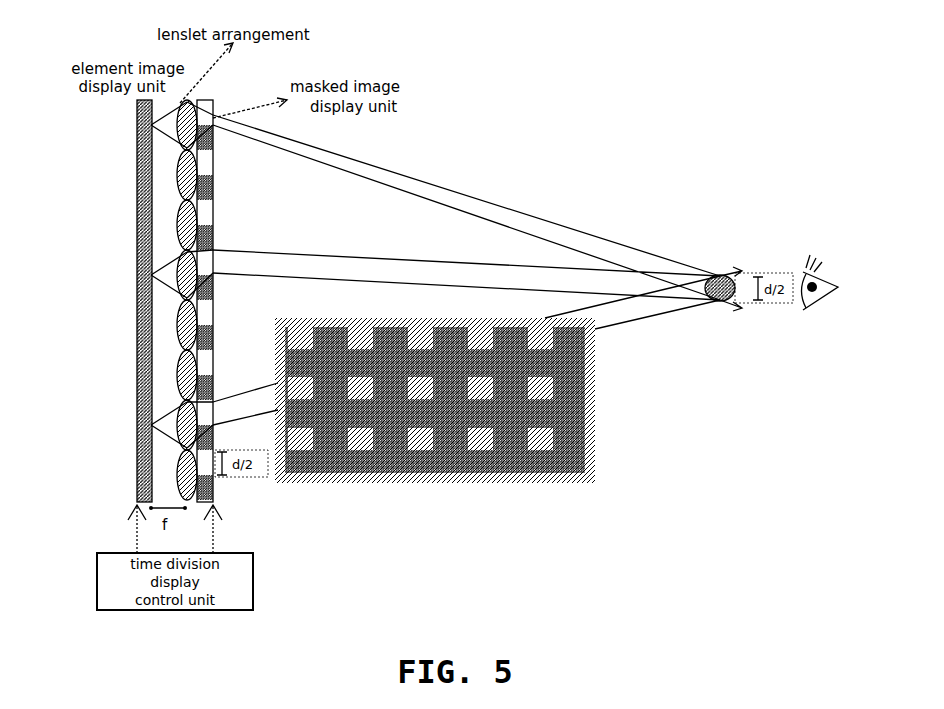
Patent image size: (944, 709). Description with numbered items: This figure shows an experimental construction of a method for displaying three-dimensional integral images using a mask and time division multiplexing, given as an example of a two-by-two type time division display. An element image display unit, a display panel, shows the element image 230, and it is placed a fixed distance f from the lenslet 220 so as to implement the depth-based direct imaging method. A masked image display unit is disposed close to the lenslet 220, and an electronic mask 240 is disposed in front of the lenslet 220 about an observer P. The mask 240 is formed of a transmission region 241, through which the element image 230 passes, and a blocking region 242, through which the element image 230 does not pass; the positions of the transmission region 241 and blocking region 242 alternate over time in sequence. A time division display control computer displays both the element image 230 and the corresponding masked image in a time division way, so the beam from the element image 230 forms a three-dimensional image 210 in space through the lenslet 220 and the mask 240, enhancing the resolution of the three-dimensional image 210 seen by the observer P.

The three-dimensional image 210 is at (725, 277).
The lenslet 220 is at (185, 383).
The element image 230 is at (139, 247).
The mask 240 is at (688, 378).
The transmission region 241 is at (208, 216).
The blocking region 242 is at (212, 177).
The observer P is at (823, 311).